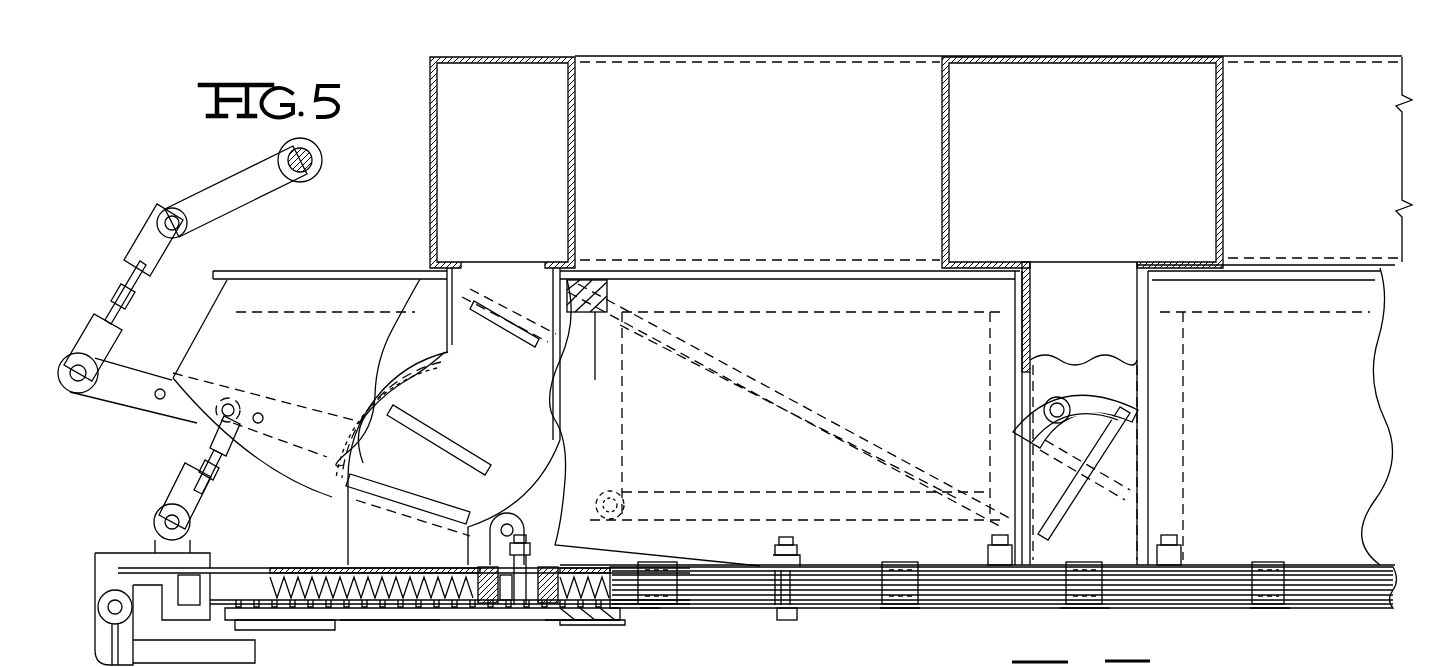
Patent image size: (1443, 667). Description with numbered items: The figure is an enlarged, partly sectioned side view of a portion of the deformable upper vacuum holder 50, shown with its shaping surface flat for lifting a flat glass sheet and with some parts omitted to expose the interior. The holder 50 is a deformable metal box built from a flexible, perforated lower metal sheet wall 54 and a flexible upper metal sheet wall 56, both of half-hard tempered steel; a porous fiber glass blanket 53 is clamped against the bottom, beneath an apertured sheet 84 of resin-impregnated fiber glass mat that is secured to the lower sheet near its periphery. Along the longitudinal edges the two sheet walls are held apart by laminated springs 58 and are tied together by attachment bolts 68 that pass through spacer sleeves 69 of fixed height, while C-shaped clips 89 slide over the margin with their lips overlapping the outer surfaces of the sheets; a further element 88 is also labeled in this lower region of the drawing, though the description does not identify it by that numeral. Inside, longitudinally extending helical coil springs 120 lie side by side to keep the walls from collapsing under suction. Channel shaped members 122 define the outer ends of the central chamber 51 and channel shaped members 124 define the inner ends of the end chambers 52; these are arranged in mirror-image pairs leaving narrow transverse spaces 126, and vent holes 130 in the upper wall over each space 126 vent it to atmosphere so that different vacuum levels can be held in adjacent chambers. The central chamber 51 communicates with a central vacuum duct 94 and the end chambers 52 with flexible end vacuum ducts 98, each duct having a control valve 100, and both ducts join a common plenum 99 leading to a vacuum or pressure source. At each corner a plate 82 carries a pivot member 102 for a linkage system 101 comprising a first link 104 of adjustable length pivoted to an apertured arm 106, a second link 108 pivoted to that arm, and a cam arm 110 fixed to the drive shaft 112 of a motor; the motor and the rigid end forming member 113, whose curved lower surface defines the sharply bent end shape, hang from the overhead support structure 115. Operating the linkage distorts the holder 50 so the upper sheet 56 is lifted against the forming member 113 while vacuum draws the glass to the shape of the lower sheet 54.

The deformable upper vacuum holder 50 is at (267, 538).
The central chamber 51 is at (1124, 620).
The end chambers 52 is at (394, 640).
The blanket 53 is at (623, 628).
The lower metal sheet wall 54 is at (318, 630).
The upper metal sheet wall 56 is at (310, 568).
The laminated springs 58 is at (850, 592).
The attachment bolts 68 is at (788, 618).
The spacer sleeves 69 is at (776, 597).
The plate 82 is at (205, 556).
The apertured sheet 84 is at (622, 613).
The toothed rack 88 is at (427, 610).
The C-shaped clips 89 is at (903, 590).
The central vacuum duct 94 is at (1096, 325).
The flexible end vacuum ducts 98 is at (445, 358).
The common plenum 99 is at (723, 167).
The control valve 100 is at (497, 328).
The linkage system 101 is at (116, 420).
The pivot member 102 is at (155, 540).
The first link 104 is at (190, 465).
The apertured arm 106 is at (133, 362).
The second link 108 is at (137, 250).
The cam arm 110 is at (228, 185).
The drive shaft 112 is at (312, 162).
The end forming member 113 is at (269, 362).
The overhead support structure 115 is at (338, 272).
The helical coil springs 120 is at (414, 563).
The channel shaped members 122 is at (530, 607).
The channel shaped members 124 is at (490, 610).
The transversely extending spaces 126 is at (507, 610).
The vent holes 130 is at (513, 557).